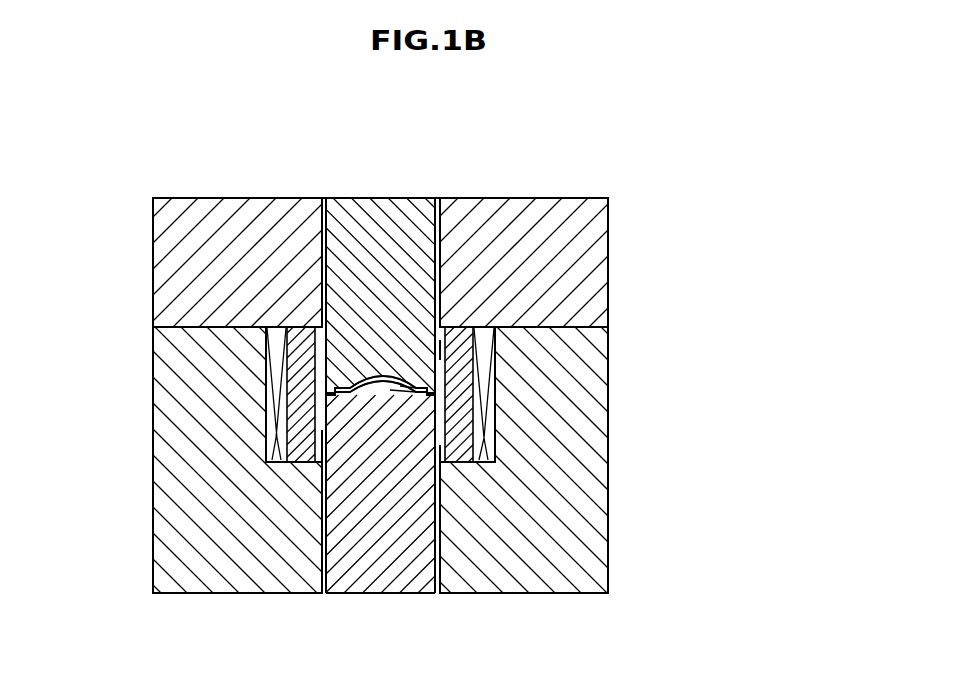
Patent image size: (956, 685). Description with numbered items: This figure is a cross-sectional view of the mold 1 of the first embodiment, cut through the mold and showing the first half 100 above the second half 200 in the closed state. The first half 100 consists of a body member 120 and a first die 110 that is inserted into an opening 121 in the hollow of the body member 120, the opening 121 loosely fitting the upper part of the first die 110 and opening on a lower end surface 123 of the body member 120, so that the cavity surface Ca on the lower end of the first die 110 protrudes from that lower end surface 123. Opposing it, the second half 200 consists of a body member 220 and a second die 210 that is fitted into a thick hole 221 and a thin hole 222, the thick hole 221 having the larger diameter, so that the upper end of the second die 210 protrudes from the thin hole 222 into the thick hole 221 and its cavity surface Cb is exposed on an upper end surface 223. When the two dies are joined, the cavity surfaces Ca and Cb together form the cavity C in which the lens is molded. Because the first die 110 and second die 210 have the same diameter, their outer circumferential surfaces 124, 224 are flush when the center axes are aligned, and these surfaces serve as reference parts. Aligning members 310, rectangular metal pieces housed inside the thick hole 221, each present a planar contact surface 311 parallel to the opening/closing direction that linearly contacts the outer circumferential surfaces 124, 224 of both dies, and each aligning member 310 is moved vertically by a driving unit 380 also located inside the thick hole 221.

The mold 1 is at (627, 238).
The first half 100 is at (610, 298).
The second half 200 is at (610, 452).
The first die 110 is at (358, 218).
The second die 210 is at (413, 574).
The body member 120 is at (225, 212).
The body member 220 is at (225, 577).
The opening 121 is at (322, 243).
The lower end surface 123 is at (153, 355).
The outer circumferential surface 124 is at (438, 357).
The thick hole 221 is at (287, 455).
The thin hole 222 is at (322, 525).
The upper end surface 223 is at (153, 328).
The outer circumferential surface 224 is at (443, 505).
The aligning member 310 is at (300, 348).
The contact surface 311 is at (318, 430).
The driving unit 380 is at (267, 452).
The cavity C is at (363, 396).
The cavity surface Ca is at (417, 382).
The cavity surface Cb is at (400, 397).